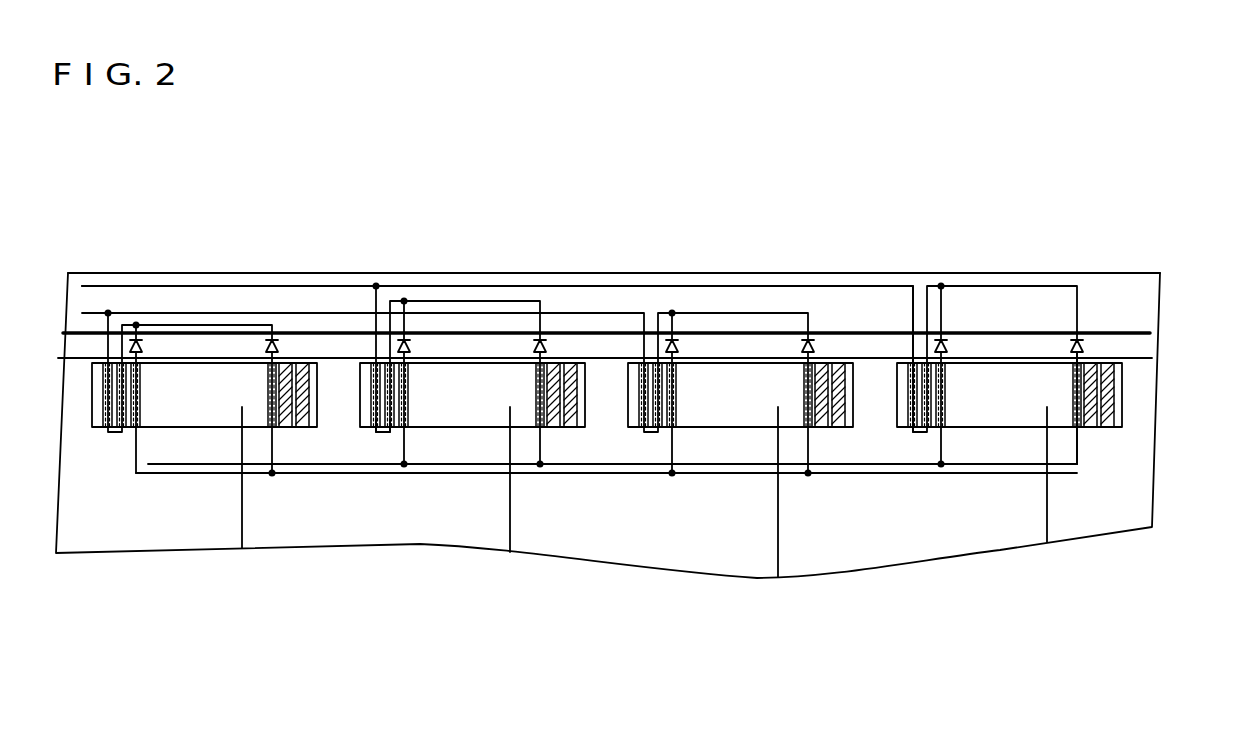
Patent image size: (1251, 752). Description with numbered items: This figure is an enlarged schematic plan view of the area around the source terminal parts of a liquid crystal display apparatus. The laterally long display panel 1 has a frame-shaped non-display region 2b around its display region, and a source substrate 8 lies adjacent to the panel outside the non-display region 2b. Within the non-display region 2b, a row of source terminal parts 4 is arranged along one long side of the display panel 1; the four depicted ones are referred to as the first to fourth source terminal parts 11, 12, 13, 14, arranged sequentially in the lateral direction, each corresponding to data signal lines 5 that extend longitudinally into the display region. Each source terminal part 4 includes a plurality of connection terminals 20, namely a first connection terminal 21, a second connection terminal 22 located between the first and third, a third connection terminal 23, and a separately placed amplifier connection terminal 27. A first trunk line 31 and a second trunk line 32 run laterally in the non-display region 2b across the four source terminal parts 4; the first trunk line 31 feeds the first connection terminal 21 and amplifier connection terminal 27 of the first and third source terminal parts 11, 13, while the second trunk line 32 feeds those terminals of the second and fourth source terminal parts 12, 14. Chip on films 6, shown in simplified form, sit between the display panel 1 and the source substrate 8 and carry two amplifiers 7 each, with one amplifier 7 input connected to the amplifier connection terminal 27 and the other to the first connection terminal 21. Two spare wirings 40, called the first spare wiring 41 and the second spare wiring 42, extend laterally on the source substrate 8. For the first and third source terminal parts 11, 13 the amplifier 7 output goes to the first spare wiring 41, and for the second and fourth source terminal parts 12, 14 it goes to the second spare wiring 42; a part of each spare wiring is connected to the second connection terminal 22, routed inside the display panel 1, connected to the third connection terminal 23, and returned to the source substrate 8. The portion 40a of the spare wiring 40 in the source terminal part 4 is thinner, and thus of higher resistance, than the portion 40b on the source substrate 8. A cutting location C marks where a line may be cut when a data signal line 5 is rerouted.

The display panel 1 is at (1140, 502).
The non-display region 2b is at (1125, 472).
The source terminal part 4 is at (1133, 390).
The data signal line 5 is at (242, 528).
The chip on film 6 is at (1147, 350).
The amplifier 7 is at (137, 339).
The source substrate 8 is at (1152, 303).
The first source terminal part 11 is at (213, 370).
The second source terminal part 12 is at (473, 370).
The third source terminal part 13 is at (740, 370).
The fourth source terminal part 14 is at (1008, 370).
The connection terminal 20 is at (278, 433).
The first connection terminal 21 is at (140, 385).
The second connection terminal 22 is at (125, 413).
The third connection terminal 23 is at (106, 416).
The amplifier connection terminal 27 is at (266, 413).
The first trunk line 31 is at (988, 475).
The second trunk line 32 is at (1078, 450).
The spare wiring 40 is at (598, 285).
The portion of the spare wiring provided in the source terminal part 40a is at (907, 390).
The portion of the spare wiring provided in the source substrate 40b is at (870, 285).
The first spare wiring 41 is at (310, 312).
The second spare wiring 42 is at (105, 285).
The cutting location C is at (382, 448).